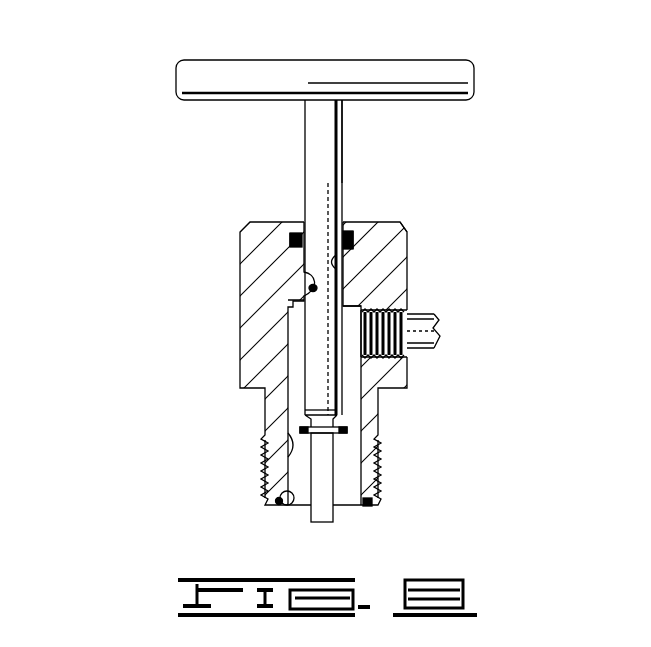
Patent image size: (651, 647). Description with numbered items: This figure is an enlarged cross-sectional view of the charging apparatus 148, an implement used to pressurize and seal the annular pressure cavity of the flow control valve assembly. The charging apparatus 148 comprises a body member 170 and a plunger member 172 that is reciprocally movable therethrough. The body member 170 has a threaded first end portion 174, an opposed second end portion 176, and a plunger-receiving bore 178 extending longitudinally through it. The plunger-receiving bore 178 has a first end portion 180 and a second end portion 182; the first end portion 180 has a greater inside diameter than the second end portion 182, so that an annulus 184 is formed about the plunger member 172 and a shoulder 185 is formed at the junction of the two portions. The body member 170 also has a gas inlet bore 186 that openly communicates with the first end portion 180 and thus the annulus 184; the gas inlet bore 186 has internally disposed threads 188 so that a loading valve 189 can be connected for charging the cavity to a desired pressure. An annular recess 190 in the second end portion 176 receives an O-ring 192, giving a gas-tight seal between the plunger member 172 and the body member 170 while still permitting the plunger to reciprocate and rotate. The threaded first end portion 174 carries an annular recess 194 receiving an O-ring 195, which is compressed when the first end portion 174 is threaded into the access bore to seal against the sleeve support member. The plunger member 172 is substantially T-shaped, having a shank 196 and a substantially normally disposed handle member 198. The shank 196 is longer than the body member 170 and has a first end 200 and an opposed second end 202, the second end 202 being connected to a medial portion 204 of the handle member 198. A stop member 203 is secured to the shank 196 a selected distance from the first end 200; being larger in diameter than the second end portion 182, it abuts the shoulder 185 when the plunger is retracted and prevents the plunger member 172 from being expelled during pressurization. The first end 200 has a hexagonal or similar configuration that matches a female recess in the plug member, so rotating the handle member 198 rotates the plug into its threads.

The charging apparatus 148 is at (157, 49).
The body member 170 is at (410, 251).
The plunger member 172 is at (350, 151).
The threaded first end portion 174 is at (265, 488).
The second end portion 176 is at (400, 226).
The plunger-receiving bore 178 is at (312, 288).
The first end portion 180 is at (288, 448).
The second end portion 182 is at (336, 262).
The annulus 184 is at (345, 418).
The shoulder 185 is at (355, 308).
The gas inlet bore 186 is at (437, 314).
The internally disposed threads 188 is at (437, 338).
The loading valve 189 is at (437, 332).
The annular recess 190 is at (349, 229).
The O-ring 192 is at (352, 238).
The annular recess 194 is at (288, 505).
The O-ring 195 is at (278, 503).
The shank 196 is at (330, 136).
The handle member 198 is at (425, 62).
The first end 200 is at (322, 522).
The second end 202 is at (315, 106).
The stop member 203 is at (350, 430).
The medial portion 204 is at (330, 82).